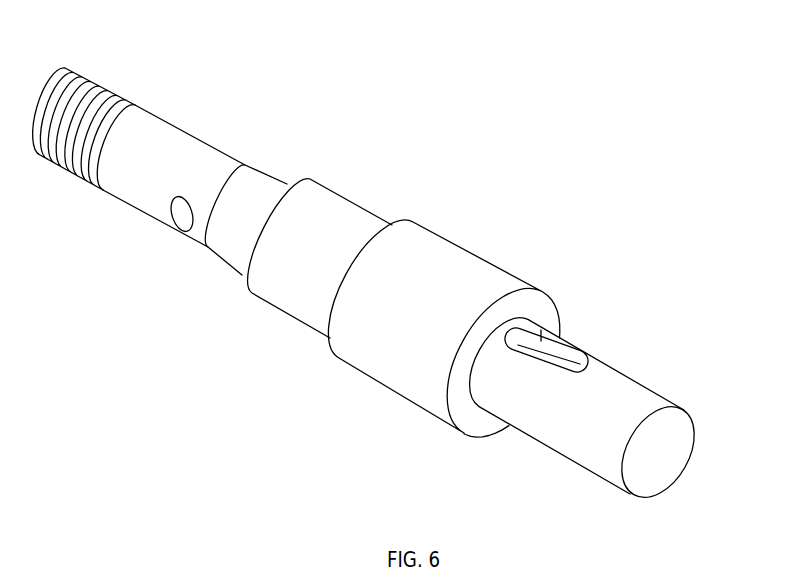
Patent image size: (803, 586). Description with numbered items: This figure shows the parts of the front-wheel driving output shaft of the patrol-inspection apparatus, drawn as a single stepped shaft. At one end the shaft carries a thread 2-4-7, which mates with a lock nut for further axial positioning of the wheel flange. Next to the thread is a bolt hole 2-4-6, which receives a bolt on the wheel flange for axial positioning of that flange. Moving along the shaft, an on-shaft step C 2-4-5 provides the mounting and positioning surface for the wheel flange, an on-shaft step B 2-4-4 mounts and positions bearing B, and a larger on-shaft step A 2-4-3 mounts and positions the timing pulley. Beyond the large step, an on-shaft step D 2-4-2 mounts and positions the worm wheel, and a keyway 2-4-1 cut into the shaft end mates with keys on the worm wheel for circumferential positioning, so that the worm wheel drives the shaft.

The keyway 2-4-1 is at (588, 350).
The on-shaft step D 2-4-2 is at (537, 288).
The on-shaft step A 2-4-3 is at (395, 224).
The on-shaft step B 2-4-4 is at (310, 181).
The on-shaft step C 2-4-5 is at (246, 166).
The bolt hole 2-4-6 is at (177, 195).
The thread 2-4-7 is at (121, 81).